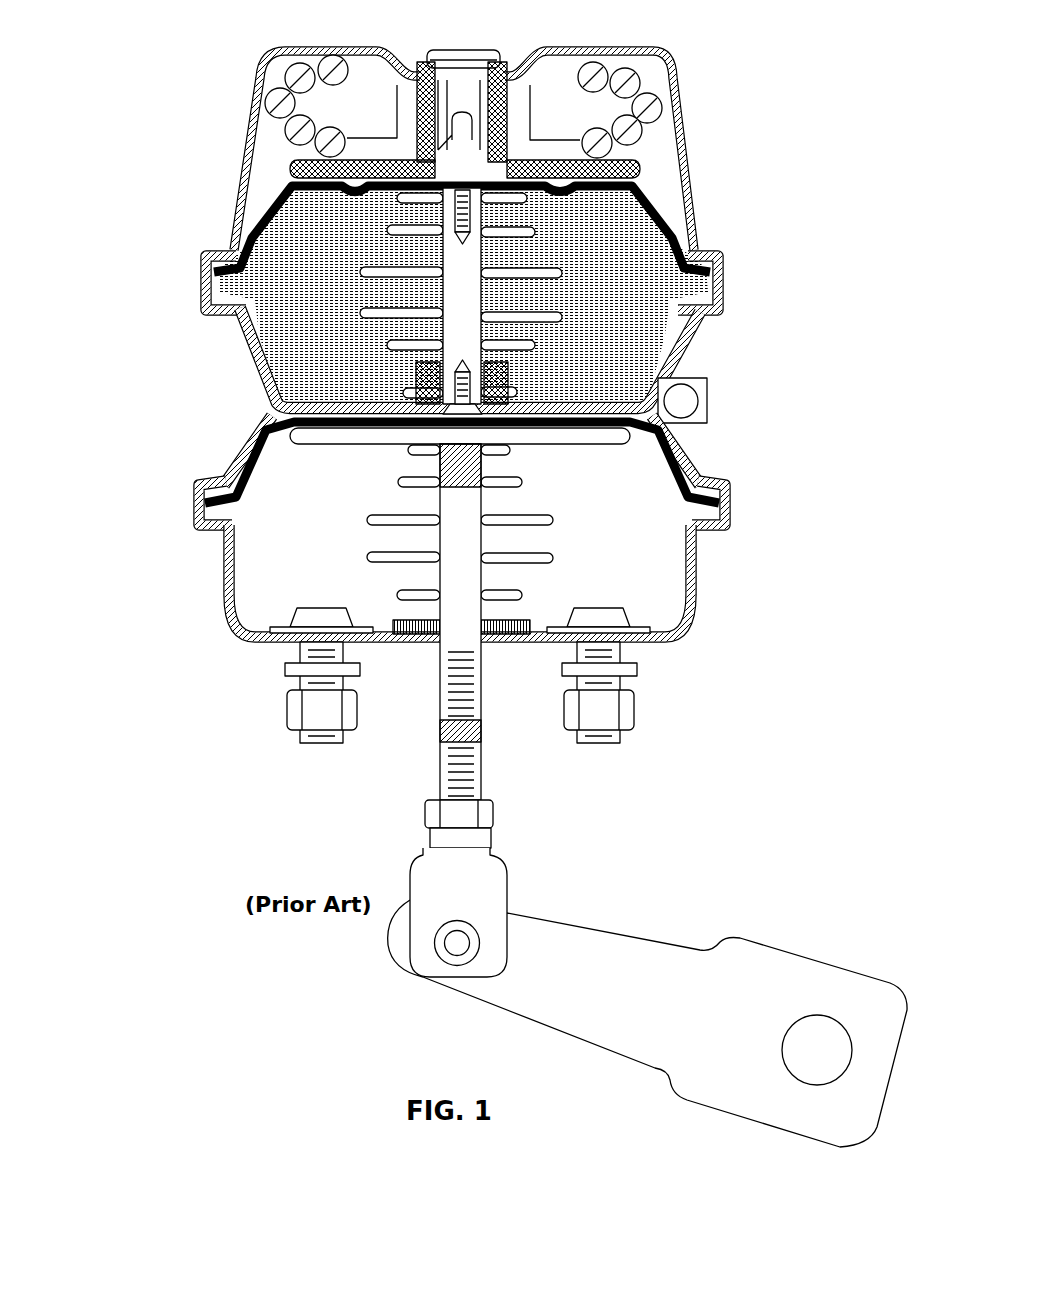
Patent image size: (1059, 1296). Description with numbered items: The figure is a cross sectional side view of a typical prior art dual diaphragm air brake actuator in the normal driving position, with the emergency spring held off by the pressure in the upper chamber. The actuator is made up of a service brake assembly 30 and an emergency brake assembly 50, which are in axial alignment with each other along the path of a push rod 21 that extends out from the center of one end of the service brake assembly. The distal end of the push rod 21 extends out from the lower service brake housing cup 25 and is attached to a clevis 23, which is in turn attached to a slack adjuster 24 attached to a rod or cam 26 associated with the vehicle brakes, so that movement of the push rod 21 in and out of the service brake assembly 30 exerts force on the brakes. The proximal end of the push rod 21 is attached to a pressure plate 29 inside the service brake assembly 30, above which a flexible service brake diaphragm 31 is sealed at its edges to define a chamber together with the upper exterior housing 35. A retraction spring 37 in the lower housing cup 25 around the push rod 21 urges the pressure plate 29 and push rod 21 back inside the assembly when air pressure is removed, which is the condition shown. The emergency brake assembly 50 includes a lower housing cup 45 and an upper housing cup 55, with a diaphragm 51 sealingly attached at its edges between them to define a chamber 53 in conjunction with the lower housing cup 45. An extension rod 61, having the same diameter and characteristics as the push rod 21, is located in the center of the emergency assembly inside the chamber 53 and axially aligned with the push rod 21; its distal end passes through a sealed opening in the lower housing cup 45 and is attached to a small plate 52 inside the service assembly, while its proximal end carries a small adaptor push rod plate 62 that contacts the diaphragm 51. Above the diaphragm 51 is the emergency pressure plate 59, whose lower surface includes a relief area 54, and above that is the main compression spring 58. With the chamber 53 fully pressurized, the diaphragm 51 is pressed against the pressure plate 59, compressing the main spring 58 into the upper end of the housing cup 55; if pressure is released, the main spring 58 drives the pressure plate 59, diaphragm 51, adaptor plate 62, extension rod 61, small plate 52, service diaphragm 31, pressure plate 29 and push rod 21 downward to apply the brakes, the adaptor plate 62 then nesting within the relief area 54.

The push rod 21 is at (440, 712).
The clevis 23 is at (493, 876).
The slack adjuster 24 is at (605, 948).
The lower service brake housing cup 25 is at (257, 616).
The rod or cam 26 is at (814, 1032).
The pressure plate 29 is at (592, 442).
The service brake assembly 30 is at (190, 580).
The service brake diaphragm 31 is at (253, 488).
The upper exterior housing 35 is at (242, 456).
The retraction spring 37 is at (385, 557).
The lower housing cup 45 is at (248, 360).
The emergency brake assembly 50 is at (170, 356).
The diaphragm 51 is at (662, 218).
The small plate 52 is at (518, 403).
The chamber 53 is at (634, 325).
The relief area 54 is at (372, 171).
The upper housing cup 55 is at (240, 166).
The main compression spring 58 is at (310, 121).
The pressure plate 59 is at (626, 170).
The extension rod 61 is at (466, 300).
The adaptor push rod plate 62 is at (392, 204).